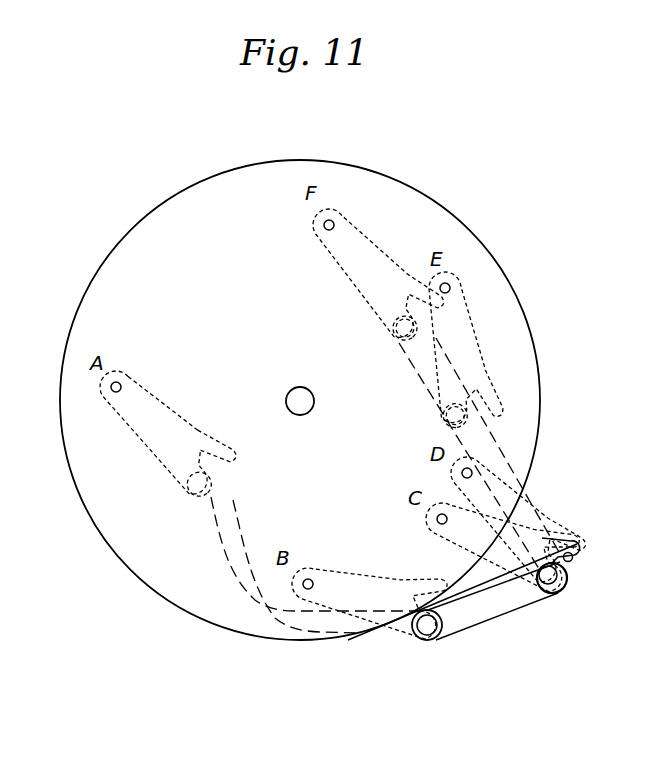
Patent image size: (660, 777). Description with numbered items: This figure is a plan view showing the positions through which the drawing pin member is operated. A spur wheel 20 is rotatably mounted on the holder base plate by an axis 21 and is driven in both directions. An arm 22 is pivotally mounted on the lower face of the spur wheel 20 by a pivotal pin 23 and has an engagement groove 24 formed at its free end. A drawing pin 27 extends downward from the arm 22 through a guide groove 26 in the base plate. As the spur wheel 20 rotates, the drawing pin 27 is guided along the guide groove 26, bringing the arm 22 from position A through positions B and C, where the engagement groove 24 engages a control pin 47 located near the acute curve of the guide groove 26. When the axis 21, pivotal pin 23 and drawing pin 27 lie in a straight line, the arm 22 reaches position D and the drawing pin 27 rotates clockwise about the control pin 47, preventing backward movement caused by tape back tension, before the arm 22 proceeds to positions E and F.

The spur wheel 20 is at (398, 193).
The axis 21 is at (311, 393).
The arm 22 is at (163, 412).
The pivotal pin 23 is at (120, 382).
The engagement groove 24 is at (202, 440).
The guide groove 26 is at (482, 620).
The drawing pin 27 is at (206, 484).
The control pin 47 is at (576, 558).